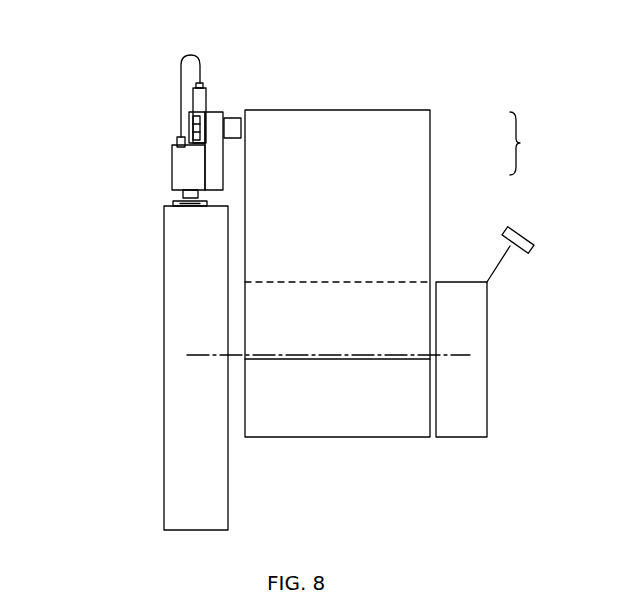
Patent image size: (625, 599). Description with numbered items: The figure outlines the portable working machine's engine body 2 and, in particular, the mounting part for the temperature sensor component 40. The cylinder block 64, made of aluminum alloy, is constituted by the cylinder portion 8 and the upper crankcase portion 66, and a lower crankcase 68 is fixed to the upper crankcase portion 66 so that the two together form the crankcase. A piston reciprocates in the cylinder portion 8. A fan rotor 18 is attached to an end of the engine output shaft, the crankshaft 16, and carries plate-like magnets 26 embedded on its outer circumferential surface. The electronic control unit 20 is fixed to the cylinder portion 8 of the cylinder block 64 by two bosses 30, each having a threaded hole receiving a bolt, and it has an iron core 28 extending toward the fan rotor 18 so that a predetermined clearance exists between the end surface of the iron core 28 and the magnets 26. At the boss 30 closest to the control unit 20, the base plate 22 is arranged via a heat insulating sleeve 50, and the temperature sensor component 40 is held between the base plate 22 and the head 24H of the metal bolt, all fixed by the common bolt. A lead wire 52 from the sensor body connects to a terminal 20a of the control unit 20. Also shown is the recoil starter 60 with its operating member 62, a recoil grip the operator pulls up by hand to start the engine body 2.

The engine body 2 is at (425, 79).
The cylinder portion 8 is at (407, 140).
The crankshaft 16 is at (272, 356).
The fan rotor 18 is at (175, 416).
The electronic control unit 20 is at (172, 172).
The terminal 20a is at (177, 142).
The base plate 22 is at (215, 165).
The head of the bolt 24H is at (189, 115).
The plate-like magnets 26 is at (188, 205).
The iron core 28 is at (185, 193).
The boss 30 is at (240, 127).
The temperature sensor component 40 is at (192, 98).
The heat insulating sleeve 50 is at (238, 126).
The lead wire 52 is at (183, 63).
The recoil starter 60 is at (480, 400).
The operating member 62 is at (518, 233).
The cylinder block 64 is at (550, 156).
The upper crankcase portion 66 is at (368, 297).
The lower crankcase 68 is at (375, 428).